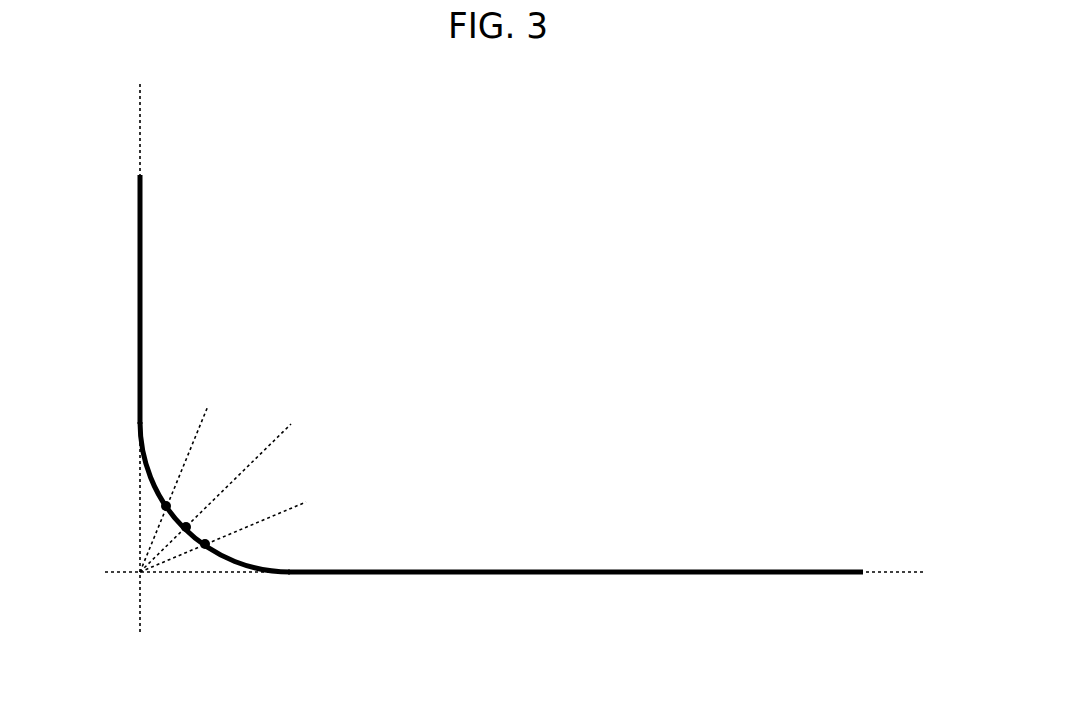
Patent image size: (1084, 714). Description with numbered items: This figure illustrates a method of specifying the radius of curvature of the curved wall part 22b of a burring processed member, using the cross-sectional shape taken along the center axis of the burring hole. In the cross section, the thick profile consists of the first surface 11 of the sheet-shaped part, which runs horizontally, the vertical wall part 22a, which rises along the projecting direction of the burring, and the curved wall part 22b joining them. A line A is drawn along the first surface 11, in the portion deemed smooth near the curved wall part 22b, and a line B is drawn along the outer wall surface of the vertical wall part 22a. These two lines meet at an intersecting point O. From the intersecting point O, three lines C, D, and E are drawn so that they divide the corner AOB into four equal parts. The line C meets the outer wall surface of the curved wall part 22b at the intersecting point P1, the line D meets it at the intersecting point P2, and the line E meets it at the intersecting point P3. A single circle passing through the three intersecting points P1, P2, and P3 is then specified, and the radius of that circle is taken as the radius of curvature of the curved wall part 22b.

The vertical wall part 22a is at (150, 292).
The curved wall part 22b is at (157, 517).
The first surface 11 is at (638, 570).
The line A is at (906, 574).
The line B is at (139, 117).
The intersecting point O is at (198, 528).
The line C is at (182, 477).
The line D is at (224, 487).
The line E is at (234, 529).
The intersecting point P1 is at (177, 489).
The intersecting point P2 is at (202, 513).
The intersecting point P3 is at (227, 535).